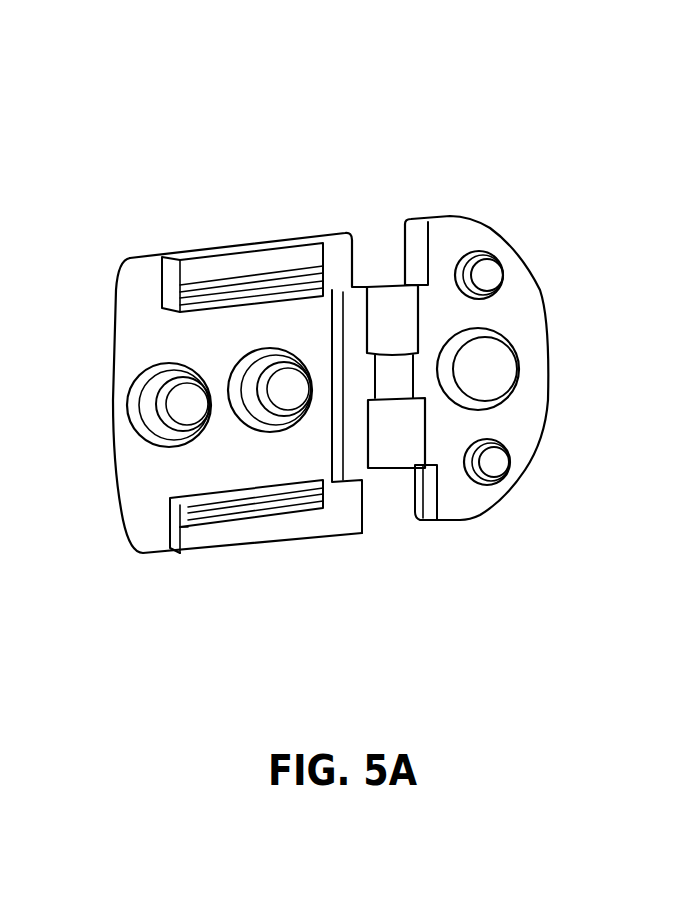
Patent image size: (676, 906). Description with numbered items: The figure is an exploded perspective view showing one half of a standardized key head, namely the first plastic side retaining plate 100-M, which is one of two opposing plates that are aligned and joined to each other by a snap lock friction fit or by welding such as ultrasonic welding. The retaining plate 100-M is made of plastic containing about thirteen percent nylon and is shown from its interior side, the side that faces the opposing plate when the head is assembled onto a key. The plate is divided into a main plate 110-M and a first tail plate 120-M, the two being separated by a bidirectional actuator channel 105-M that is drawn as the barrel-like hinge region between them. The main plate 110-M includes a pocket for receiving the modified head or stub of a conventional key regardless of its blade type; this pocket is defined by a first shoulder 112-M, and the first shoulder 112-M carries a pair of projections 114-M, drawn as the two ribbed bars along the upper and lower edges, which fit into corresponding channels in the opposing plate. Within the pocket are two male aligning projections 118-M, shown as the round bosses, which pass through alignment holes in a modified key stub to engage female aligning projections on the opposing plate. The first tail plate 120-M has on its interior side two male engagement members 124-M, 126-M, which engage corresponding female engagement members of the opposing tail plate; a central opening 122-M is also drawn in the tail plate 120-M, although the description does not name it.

The first plastic side retaining plate 100-M is at (79, 164).
The bidirectional actuator channel 105-M is at (378, 264).
The main plate 110-M is at (131, 273).
The first shoulder 112-M is at (337, 515).
The projections 114-M is at (250, 290).
The male aligning projections 118-M is at (168, 422).
The first tail plate 120-M is at (458, 242).
The central opening 122-M is at (466, 377).
The male engagement member 124-M is at (487, 277).
The male engagement member 126-M is at (492, 463).